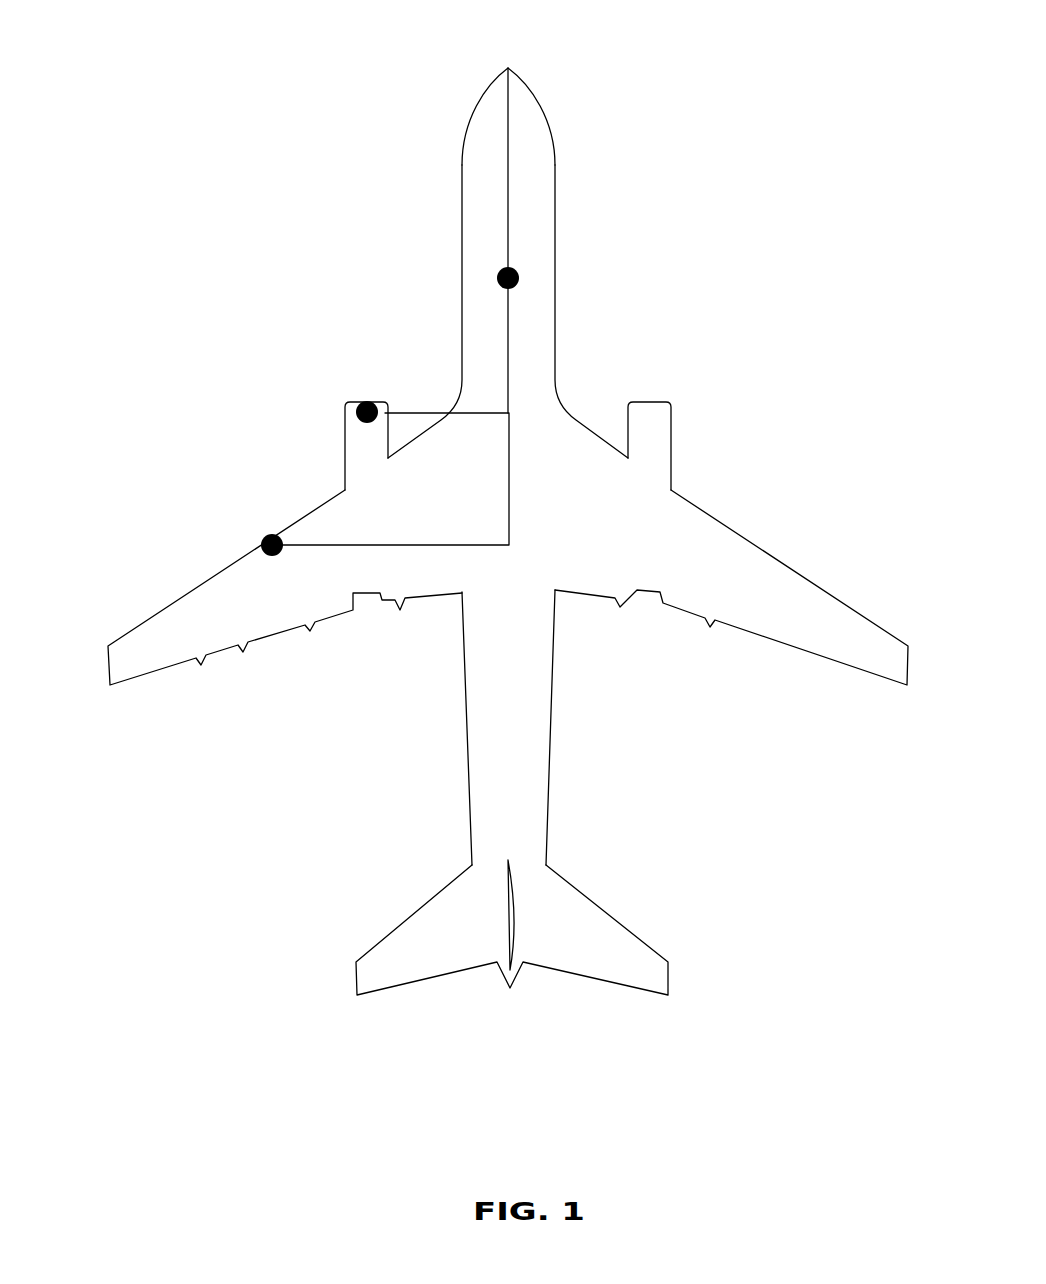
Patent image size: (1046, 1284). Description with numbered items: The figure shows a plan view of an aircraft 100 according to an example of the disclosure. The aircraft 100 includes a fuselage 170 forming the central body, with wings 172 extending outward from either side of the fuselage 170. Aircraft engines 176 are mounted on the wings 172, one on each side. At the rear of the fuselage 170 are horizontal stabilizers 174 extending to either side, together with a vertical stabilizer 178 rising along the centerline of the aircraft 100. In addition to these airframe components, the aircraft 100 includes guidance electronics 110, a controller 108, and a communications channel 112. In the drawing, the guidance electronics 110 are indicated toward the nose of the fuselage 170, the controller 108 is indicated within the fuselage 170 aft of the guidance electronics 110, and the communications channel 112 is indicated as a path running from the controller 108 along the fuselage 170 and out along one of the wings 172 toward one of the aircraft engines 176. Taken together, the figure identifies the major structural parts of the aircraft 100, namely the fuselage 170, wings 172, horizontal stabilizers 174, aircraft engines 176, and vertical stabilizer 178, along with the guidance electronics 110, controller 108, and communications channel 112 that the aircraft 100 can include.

The aircraft 100 is at (318, 66).
The controller 108 is at (552, 240).
The guidance electronics 110 is at (508, 102).
The communications channel 112 is at (397, 497).
The fuselage 170 is at (462, 254).
The wings 172 is at (163, 600).
The horizontal stabilizers 174 is at (402, 930).
The aircraft engines 176 is at (347, 402).
The vertical stabilizer 178 is at (503, 917).